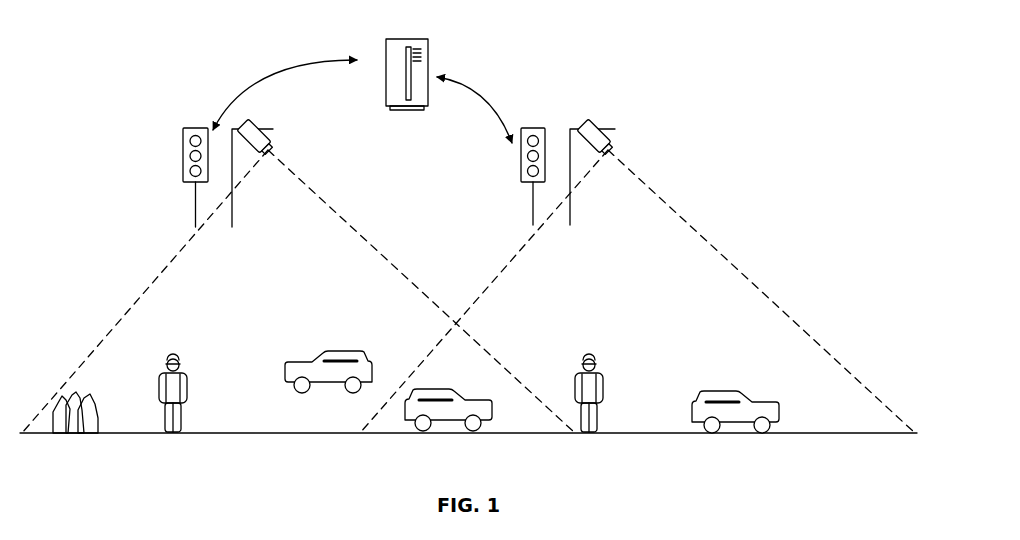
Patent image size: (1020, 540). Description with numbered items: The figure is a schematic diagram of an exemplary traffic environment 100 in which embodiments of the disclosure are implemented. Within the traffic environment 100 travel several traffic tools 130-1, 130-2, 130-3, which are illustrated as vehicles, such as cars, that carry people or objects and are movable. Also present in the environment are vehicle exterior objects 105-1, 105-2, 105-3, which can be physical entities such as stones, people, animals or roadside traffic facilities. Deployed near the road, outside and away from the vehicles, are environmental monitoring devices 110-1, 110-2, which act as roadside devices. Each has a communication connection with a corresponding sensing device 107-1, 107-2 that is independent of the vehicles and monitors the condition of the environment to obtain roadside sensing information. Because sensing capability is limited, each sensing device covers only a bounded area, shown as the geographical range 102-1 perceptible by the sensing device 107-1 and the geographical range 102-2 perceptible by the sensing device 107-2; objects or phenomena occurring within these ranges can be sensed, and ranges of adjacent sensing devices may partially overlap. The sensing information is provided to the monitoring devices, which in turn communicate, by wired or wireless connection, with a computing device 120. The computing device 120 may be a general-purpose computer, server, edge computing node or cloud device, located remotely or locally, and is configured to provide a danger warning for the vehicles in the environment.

The traffic environment 100 is at (101, 149).
The computing device 120 is at (405, 38).
The environmental monitoring device 110-1 is at (193, 128).
The environmental monitoring device 110-2 is at (540, 127).
The sensing device 107-1 is at (280, 112).
The sensing device 107-2 is at (595, 123).
The geographical range 102-1 is at (297, 244).
The geographical range 102-2 is at (644, 244).
The vehicle exterior object 105-1 is at (85, 395).
The vehicle exterior object 105-2 is at (173, 357).
The vehicle exterior object 105-3 is at (590, 358).
The traffic tool 130-1 is at (333, 352).
The traffic tool 130-2 is at (430, 390).
The traffic tool 130-3 is at (718, 392).